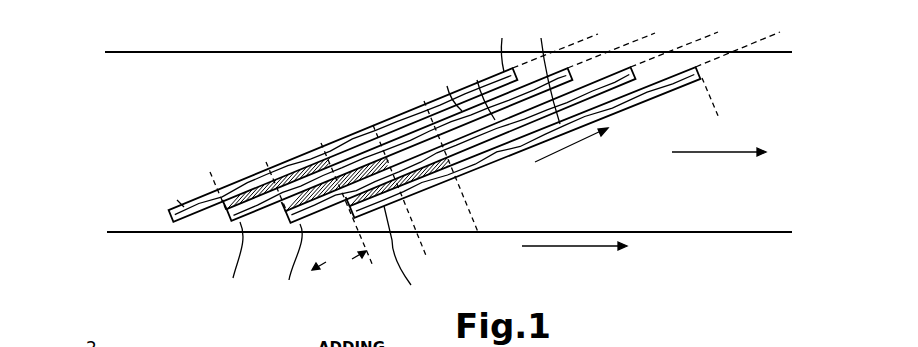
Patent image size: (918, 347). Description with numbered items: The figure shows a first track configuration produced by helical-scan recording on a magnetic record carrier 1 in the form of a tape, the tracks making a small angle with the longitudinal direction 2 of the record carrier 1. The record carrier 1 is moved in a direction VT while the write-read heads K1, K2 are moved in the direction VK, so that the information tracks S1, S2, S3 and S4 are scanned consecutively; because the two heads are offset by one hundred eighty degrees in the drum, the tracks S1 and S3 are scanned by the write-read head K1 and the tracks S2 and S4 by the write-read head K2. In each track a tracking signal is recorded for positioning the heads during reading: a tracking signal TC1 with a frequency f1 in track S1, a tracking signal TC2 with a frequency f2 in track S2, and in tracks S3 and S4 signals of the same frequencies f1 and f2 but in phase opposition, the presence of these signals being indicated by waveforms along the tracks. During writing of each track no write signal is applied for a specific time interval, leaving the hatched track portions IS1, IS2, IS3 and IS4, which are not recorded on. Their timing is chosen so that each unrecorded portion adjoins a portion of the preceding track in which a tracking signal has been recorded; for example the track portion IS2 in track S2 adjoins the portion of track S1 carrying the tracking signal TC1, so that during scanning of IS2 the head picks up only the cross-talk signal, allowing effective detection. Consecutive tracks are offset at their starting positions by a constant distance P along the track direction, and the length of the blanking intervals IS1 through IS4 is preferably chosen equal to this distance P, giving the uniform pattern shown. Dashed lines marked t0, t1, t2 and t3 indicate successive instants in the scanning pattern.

The record carrier 1 is at (755, 193).
The longitudinal direction 2 is at (726, 145).
The information track S1 is at (354, 218).
The information track S2 is at (290, 223).
The information track S3 is at (231, 221).
The information track S4 is at (173, 222).
The track portion IS1 is at (424, 101).
The track portion IS2 is at (373, 125).
The track portion IS3 is at (321, 143).
The track portion IS4 is at (266, 162).
The time instant t0 is at (358, 214).
The time instant t1 is at (407, 201).
The time instant t2 is at (458, 182).
The time instant t3 is at (719, 103).
The write-read head K1 is at (655, 42).
The write-read head K2 is at (674, 42).
The frequency f1 is at (514, 70).
The frequency f2 is at (471, 64).
The tracking signal TC1 is at (241, 282).
The tracking signal TC2 is at (171, 185).
The offset distance P is at (339, 265).
The head movement direction VK is at (571, 151).
The record carrier movement direction VT is at (588, 258).